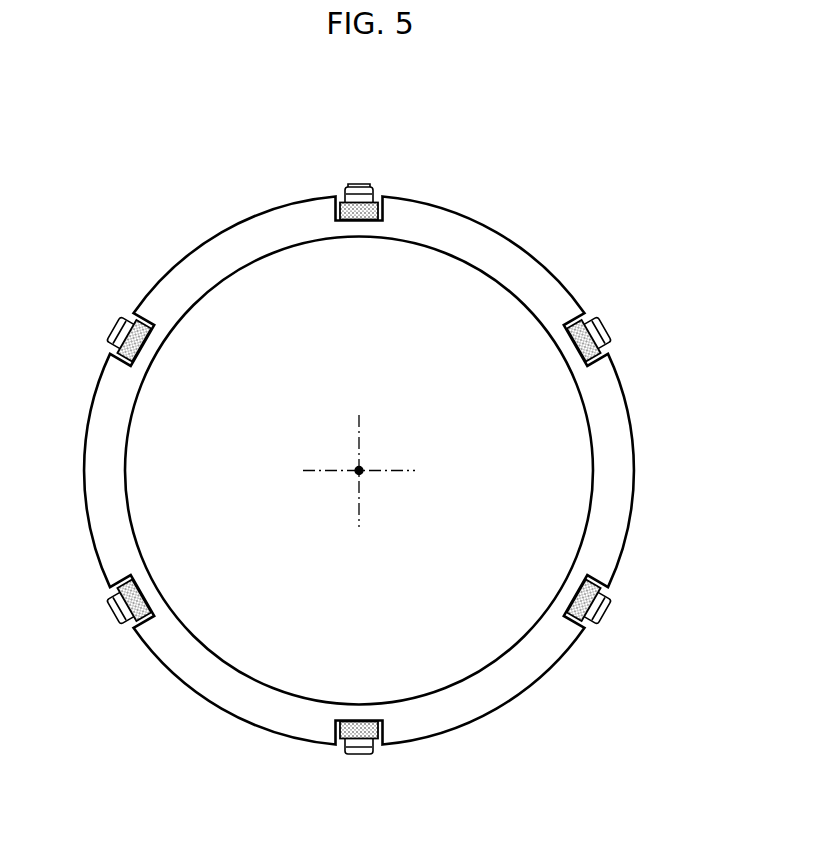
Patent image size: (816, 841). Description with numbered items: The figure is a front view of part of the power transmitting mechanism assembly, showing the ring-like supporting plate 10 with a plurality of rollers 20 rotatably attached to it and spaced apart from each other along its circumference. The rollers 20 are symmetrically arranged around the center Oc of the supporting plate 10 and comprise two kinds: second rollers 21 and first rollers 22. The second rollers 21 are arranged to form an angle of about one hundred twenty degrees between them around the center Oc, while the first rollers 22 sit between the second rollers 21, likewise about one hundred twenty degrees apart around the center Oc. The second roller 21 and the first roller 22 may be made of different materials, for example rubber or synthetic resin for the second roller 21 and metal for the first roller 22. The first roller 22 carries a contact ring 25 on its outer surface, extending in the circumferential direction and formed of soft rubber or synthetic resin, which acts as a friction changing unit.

The supporting plate 10 is at (522, 262).
The roller 20 is at (206, 146).
The second roller 21 is at (126, 328).
The first roller 22 is at (340, 193).
The contact ring 25 is at (364, 189).
The center of the supporting plate Oc is at (359, 470).